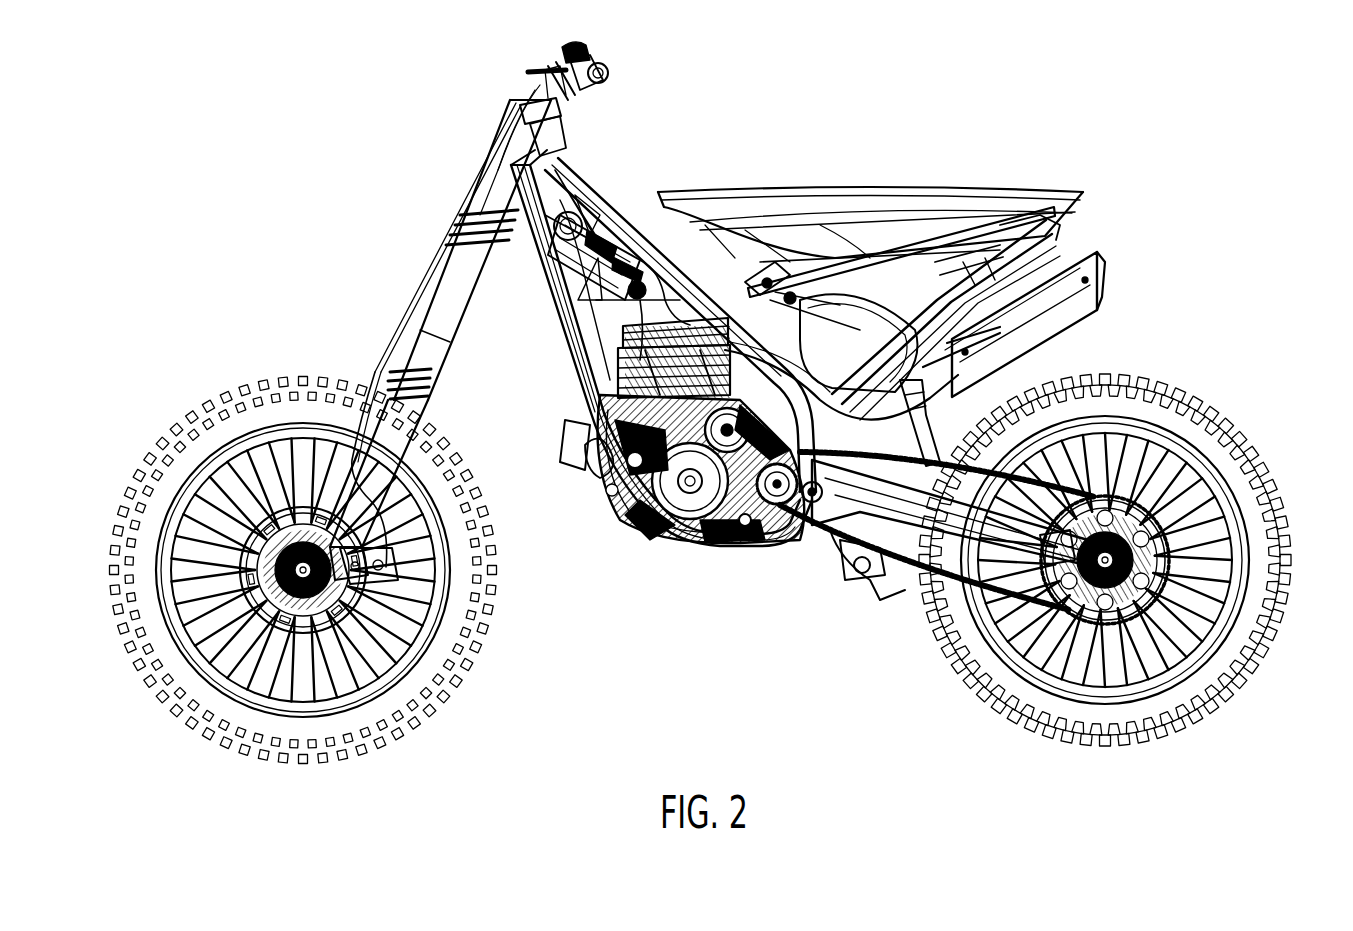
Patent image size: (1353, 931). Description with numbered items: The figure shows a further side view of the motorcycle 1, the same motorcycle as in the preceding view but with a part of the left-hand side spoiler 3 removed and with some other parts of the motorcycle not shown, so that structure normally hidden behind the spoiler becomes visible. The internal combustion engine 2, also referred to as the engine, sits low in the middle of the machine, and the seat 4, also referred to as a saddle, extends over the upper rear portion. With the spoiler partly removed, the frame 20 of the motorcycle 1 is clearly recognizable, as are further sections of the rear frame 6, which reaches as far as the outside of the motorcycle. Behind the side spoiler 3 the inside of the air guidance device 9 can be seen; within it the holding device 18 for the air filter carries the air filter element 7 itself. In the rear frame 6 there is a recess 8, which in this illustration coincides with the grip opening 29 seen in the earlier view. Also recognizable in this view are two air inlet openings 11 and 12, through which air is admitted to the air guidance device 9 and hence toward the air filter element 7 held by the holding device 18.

The motorcycle 1 is at (718, 99).
The internal combustion engine 2 is at (618, 517).
The left-hand side spoiler 3 is at (1000, 230).
The seat 4 is at (817, 210).
The rear frame 6 is at (885, 257).
The air filter element 7 is at (833, 313).
The recess 8 is at (957, 267).
The air guidance device 9 is at (780, 277).
The air inlet opening 11 is at (888, 233).
The air inlet opening 12 is at (940, 257).
The holding device 18 is at (740, 290).
The frame 20 is at (633, 223).
The grip opening 29 is at (917, 317).